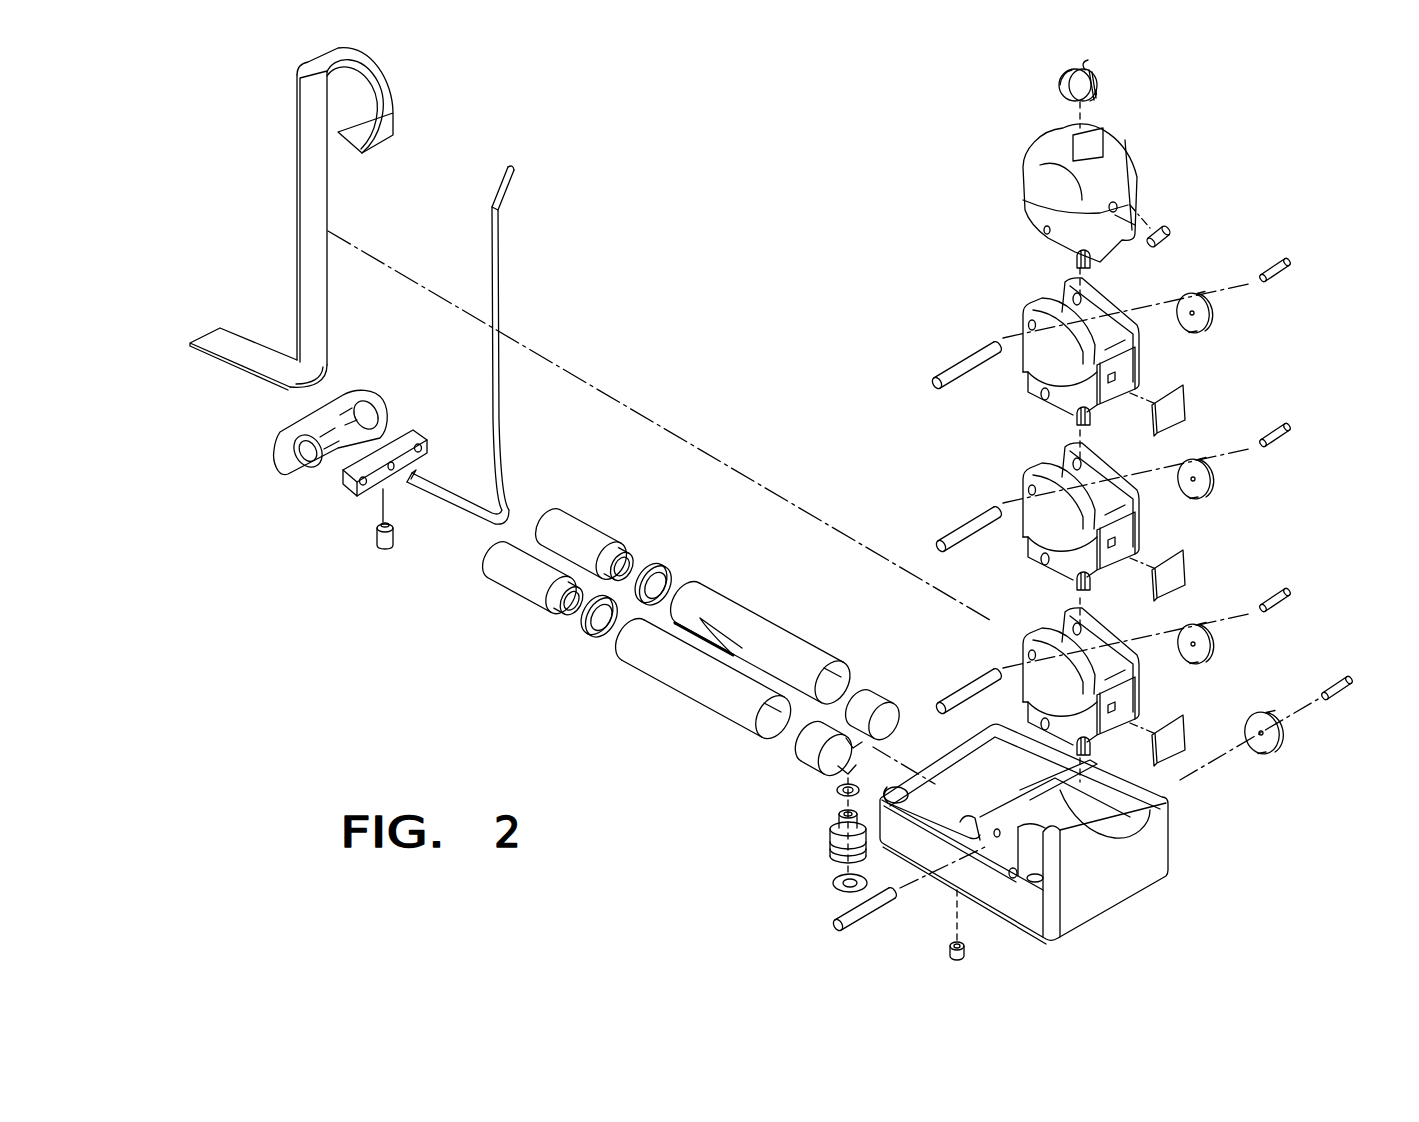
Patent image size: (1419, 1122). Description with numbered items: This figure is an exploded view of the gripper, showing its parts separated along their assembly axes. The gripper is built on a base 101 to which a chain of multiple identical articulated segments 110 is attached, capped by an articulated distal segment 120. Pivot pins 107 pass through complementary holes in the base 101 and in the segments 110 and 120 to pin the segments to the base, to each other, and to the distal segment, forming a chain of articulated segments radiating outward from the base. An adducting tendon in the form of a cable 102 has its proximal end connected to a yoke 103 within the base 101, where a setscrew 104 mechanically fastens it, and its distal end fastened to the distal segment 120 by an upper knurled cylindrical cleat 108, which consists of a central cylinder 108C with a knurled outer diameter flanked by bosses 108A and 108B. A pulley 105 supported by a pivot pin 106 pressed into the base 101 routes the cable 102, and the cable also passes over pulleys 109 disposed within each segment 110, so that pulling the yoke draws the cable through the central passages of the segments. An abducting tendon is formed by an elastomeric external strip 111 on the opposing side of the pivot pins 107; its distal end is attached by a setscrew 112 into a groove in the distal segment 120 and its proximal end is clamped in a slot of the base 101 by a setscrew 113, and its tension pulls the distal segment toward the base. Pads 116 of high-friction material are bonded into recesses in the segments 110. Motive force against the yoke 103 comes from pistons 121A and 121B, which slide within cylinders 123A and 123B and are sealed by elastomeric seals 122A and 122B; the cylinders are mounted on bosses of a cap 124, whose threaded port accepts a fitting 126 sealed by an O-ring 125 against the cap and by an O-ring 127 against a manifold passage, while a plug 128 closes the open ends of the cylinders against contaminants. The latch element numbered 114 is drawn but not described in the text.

The base 101 is at (1128, 886).
The adducting tendon 102 is at (500, 265).
The yoke 103 is at (346, 490).
The setscrew 104 is at (383, 550).
The pulley 105 is at (1279, 741).
The pivot pin 106 is at (1288, 275).
The pivot pins 107 is at (961, 362).
The knurled cylindrical cleat 108 is at (1100, 80).
The boss 108A is at (1097, 66).
The boss 108B is at (1070, 89).
The central cylinder 108C is at (1098, 94).
The pulleys 109 is at (1209, 326).
The articulated segments 110 is at (1050, 398).
The abducting tendon 111 is at (236, 376).
The setscrew 112 is at (1166, 229).
The setscrew 113 is at (950, 952).
The latch 114 is at (1078, 262).
The pads 116 is at (1181, 401).
The distal segment 120 is at (1046, 185).
The piston 121A is at (523, 588).
The piston 121B is at (584, 506).
The elastomeric seal 122A is at (593, 637).
The elastomeric seal 122B is at (662, 565).
The cylinder 123A is at (711, 708).
The cylinder 123B is at (760, 606).
The cap 124 is at (811, 760).
The O-ring 125 is at (836, 792).
The fitting 126 is at (830, 839).
The O-ring 127 is at (833, 886).
The plug 128 is at (282, 460).